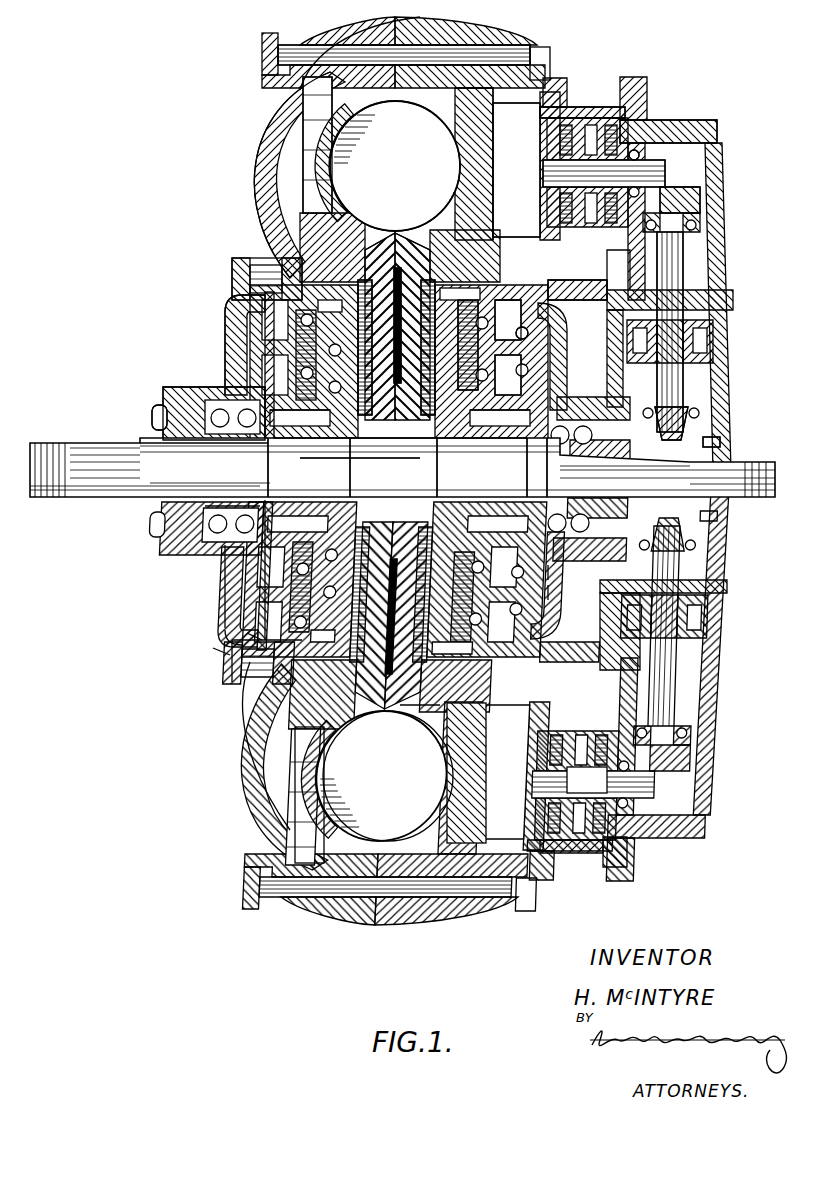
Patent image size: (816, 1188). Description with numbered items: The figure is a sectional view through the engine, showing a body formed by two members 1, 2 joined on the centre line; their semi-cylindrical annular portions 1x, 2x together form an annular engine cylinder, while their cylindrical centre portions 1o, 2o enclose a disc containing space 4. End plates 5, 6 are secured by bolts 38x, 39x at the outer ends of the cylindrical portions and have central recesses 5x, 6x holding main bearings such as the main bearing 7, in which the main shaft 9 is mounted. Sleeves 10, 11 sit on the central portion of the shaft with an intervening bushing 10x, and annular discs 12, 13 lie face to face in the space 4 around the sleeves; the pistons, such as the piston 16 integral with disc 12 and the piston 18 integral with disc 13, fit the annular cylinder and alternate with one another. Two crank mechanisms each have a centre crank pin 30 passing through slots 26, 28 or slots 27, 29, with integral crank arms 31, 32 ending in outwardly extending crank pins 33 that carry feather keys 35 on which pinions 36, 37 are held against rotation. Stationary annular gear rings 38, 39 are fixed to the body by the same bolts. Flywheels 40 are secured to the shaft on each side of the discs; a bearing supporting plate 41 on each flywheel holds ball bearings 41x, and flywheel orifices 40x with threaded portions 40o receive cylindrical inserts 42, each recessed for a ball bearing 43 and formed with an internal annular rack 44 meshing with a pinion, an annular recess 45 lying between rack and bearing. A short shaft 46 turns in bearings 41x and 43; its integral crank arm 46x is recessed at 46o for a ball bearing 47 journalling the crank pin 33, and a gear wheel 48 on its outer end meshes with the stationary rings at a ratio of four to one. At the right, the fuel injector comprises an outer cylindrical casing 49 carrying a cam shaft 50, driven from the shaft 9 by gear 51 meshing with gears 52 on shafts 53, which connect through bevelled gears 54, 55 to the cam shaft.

The engine body member 1 is at (362, 38).
The semi-cylindrical annular portion 1x is at (330, 122).
The cylindrical centre portion 1o is at (320, 268).
The engine body member 2 is at (478, 44).
The semi-cylindrical annular portion 2x is at (532, 80).
The cylindrical centre portion 2o is at (463, 280).
The disc containing space 4 is at (365, 240).
The end plate 5 is at (428, 48).
The central recess 5x is at (203, 553).
The end plate 6 is at (548, 588).
The central recess 6x is at (548, 565).
The main bearing 7 is at (163, 520).
The main shaft 9 is at (90, 478).
The sleeve 10 is at (393, 457).
The bushing 10x is at (342, 467).
The sleeve 11 is at (431, 467).
The annular disc 12 is at (397, 262).
The annular disc 13 is at (418, 265).
The piston 16 is at (407, 760).
The piston 18 is at (432, 143).
The slot 26 is at (312, 459).
The slot 27 is at (284, 467).
The slot 28 is at (482, 460).
The slot 29 is at (500, 467).
The centre crank pin 30 is at (360, 469).
The crank arm 31 is at (252, 458).
The crank arm 32 is at (525, 467).
The crank pin 33 is at (245, 345).
The feather key 35 is at (500, 429).
The pinion 36 is at (318, 400).
The pinion 37 is at (545, 352).
The annular gear ring 38 is at (245, 300).
The bolt 38x is at (232, 275).
The annular gear ring 39 is at (548, 305).
The bolt 39x is at (555, 283).
The flywheel 40 is at (230, 568).
The flywheel orifice 40x is at (507, 240).
The internally threaded portion 40o is at (243, 713).
The bearing supporting plate 41 is at (233, 647).
The ball bearing 41x is at (247, 633).
The cylindrical insert 42 is at (498, 258).
The ball bearing 43 is at (243, 693).
The internal annular rack 44 is at (400, 203).
The annular recess 45 is at (322, 675).
The short shaft 46 is at (540, 332).
The crank arm 46x is at (213, 648).
The recess 46o is at (392, 697).
The ball bearing 47 is at (297, 540).
The gear wheel 48 is at (220, 582).
The outer cylindrical casing 49 is at (588, 108).
The cam shaft 50 is at (645, 133).
The gear 51 is at (678, 438).
The gear 52 is at (710, 440).
The shaft 53 is at (692, 253).
The bevelled gear 54 is at (695, 208).
The bevelled gear 55 is at (662, 170).